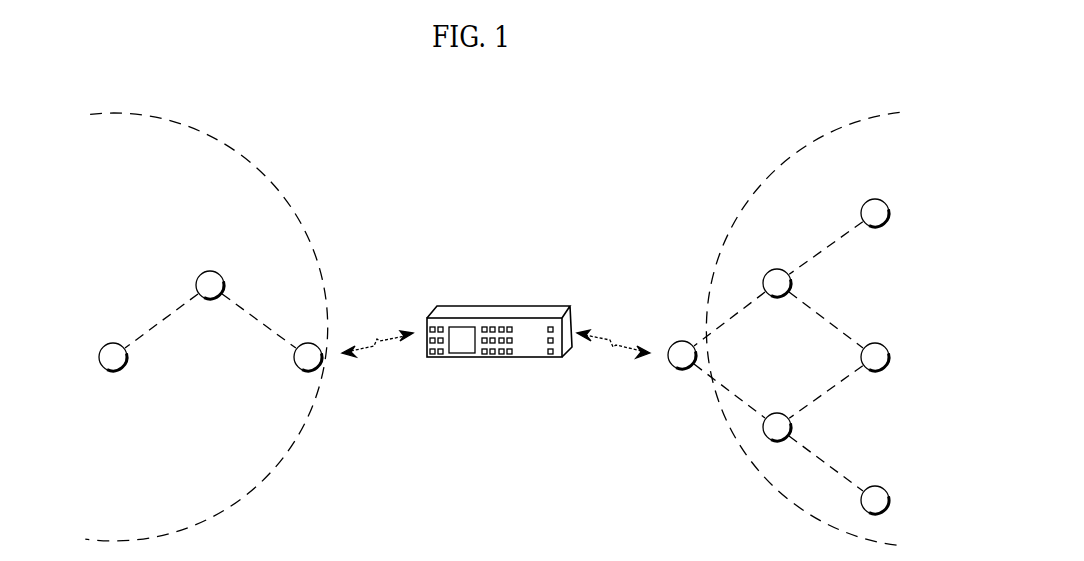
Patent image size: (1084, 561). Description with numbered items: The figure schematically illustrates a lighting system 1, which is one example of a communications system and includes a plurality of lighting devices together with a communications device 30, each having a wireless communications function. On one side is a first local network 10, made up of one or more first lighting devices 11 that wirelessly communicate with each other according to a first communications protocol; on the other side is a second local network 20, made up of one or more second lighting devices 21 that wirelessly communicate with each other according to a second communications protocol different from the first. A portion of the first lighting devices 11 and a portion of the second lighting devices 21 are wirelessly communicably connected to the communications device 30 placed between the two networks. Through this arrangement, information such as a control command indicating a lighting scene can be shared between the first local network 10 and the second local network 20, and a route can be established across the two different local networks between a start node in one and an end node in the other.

The lighting system 1 is at (823, 101).
The first local network 10 is at (234, 151).
The first lighting device 11 is at (295, 361).
The second local network 20 is at (757, 150).
The second lighting device 21 is at (683, 340).
The communications device 30 is at (538, 304).